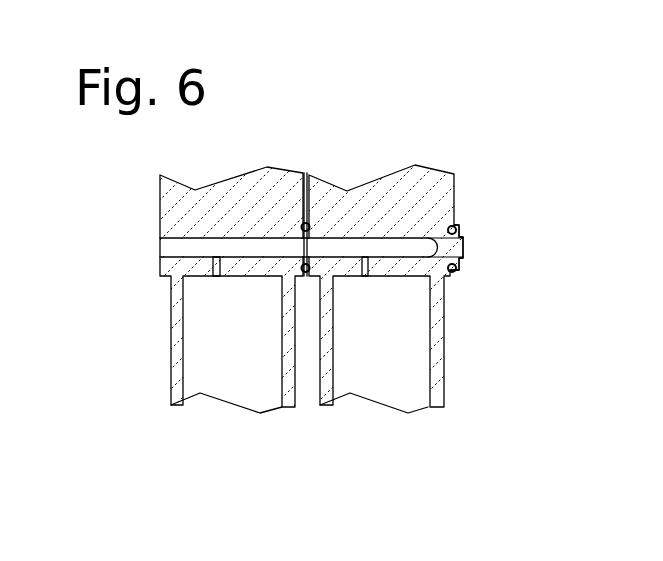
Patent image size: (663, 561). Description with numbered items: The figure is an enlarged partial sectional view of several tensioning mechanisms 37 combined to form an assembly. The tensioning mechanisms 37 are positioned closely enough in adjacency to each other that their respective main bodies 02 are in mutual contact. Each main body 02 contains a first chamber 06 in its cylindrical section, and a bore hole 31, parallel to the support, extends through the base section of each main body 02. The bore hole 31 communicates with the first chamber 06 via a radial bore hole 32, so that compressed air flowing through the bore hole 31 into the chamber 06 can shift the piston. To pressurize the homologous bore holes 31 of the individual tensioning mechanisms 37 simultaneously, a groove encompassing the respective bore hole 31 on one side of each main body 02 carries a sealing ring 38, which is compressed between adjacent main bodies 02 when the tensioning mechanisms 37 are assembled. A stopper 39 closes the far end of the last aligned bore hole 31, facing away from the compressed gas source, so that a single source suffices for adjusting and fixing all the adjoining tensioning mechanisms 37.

The main body 02 is at (158, 415).
The first chamber 06 is at (352, 363).
The second bore hole 31 is at (202, 248).
The radial bore hole 32 is at (367, 276).
The tensioning mechanism 37 is at (331, 286).
The sealing ring 38 is at (299, 224).
The stopper 39 is at (462, 247).